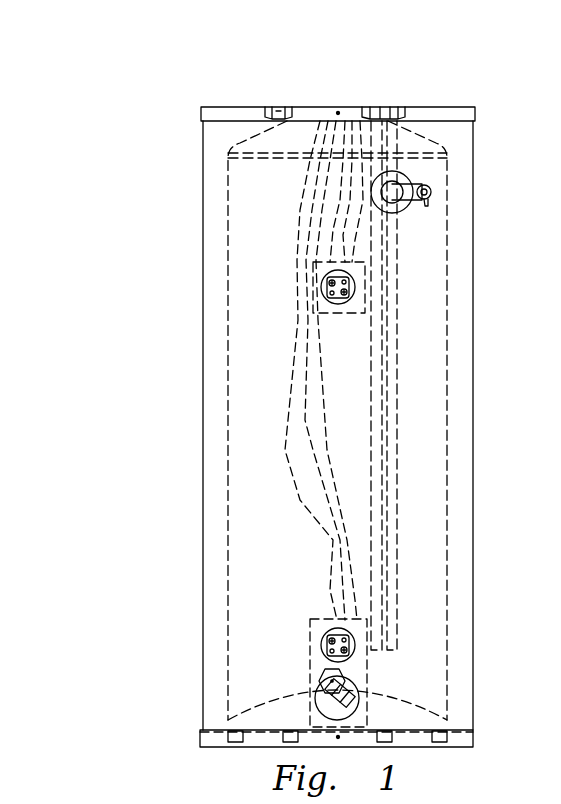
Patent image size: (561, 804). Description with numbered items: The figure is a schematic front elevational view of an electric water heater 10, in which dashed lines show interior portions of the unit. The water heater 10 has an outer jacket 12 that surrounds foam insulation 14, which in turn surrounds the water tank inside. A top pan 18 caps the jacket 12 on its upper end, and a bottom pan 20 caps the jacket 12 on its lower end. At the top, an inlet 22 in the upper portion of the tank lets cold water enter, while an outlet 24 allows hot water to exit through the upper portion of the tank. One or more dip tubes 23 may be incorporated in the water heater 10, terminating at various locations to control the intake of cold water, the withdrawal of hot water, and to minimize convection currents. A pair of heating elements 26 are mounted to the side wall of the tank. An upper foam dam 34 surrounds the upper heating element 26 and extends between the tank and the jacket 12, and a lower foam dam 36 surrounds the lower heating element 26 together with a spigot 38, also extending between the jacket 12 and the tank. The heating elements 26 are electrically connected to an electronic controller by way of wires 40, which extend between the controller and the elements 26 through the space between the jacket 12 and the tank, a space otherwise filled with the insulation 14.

The electric water heater 10 is at (148, 352).
The outer jacket 12 is at (203, 537).
The foam insulation 14 is at (215, 508).
The top pan 18 is at (222, 107).
The bottom pan 20 is at (213, 747).
The inlet 22 is at (395, 107).
The dip tube 23 is at (382, 315).
The outlet 24 is at (280, 107).
The heating element 26 is at (320, 286).
The upper foam dam 34 is at (318, 265).
The lower foam dam 36 is at (310, 619).
The spigot 38 is at (347, 708).
The wires 40 is at (347, 218).